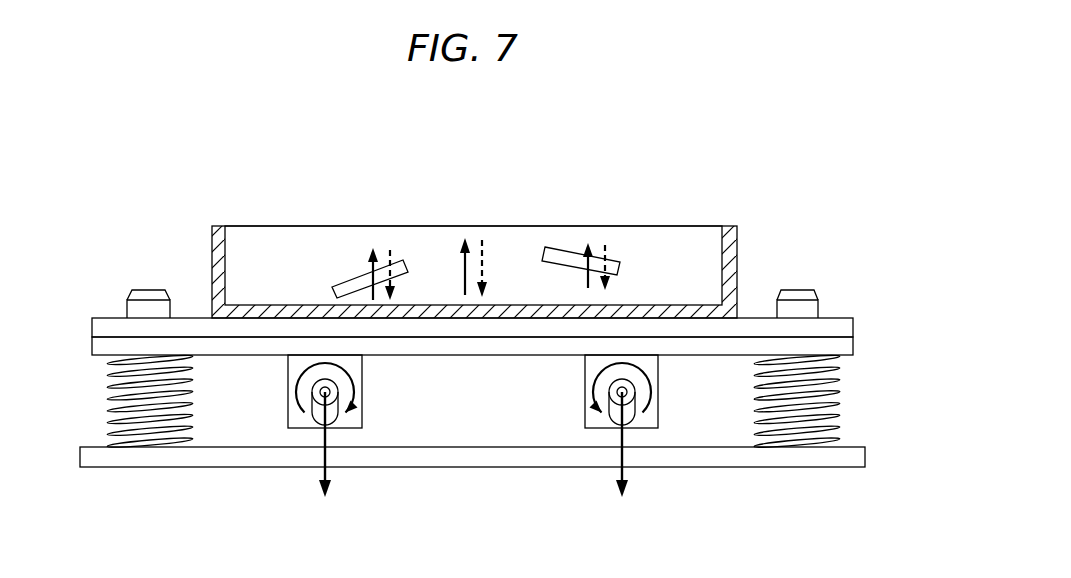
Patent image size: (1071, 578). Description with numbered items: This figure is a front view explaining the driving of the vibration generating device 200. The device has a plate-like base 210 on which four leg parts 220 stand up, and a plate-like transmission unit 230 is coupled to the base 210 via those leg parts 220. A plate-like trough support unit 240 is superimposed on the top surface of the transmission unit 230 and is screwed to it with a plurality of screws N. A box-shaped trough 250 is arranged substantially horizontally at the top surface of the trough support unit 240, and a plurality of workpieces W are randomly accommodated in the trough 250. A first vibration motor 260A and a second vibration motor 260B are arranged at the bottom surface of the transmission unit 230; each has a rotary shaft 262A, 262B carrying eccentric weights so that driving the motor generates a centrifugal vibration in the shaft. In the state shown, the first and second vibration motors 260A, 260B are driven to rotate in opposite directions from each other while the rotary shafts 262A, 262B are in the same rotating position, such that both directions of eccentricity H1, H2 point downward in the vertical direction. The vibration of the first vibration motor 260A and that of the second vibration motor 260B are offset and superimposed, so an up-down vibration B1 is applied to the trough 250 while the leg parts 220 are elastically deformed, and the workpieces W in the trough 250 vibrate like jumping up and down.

The vibration generating device 200 is at (730, 170).
The base 210 is at (467, 455).
The leg parts 220 is at (108, 395).
The transmission unit 230 is at (102, 345).
The trough support unit 240 is at (106, 320).
The trough 250 is at (212, 240).
The first vibration motor 260A is at (296, 413).
The second vibration motor 260B is at (595, 420).
The rotary shaft 262A is at (332, 392).
The rotary shaft 262B is at (628, 392).
The screws N is at (148, 306).
The workpiece W is at (350, 285).
The vibration B1 is at (489, 267).
The direction of eccentricity H1 is at (325, 459).
The direction of eccentricity H2 is at (622, 459).